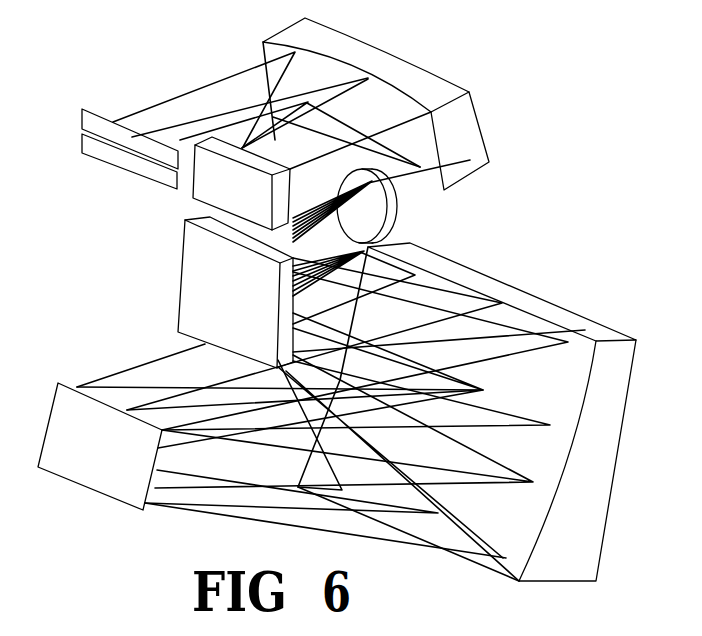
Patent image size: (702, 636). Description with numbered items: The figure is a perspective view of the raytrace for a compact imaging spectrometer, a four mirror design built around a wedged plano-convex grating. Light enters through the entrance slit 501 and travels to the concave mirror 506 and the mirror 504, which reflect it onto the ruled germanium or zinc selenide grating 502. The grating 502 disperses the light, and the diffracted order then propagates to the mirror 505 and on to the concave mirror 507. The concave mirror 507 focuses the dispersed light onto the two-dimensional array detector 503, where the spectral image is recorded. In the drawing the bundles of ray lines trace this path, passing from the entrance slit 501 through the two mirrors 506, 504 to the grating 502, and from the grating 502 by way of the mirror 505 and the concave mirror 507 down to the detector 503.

The entrance slit 501 is at (135, 166).
The germanium or zinc selenide grating 502 is at (401, 208).
The array detector 503 is at (93, 465).
The mirror 504 is at (208, 190).
The mirror 505 is at (197, 262).
The concave mirror 506 is at (434, 90).
The concave mirror 507 is at (578, 315).